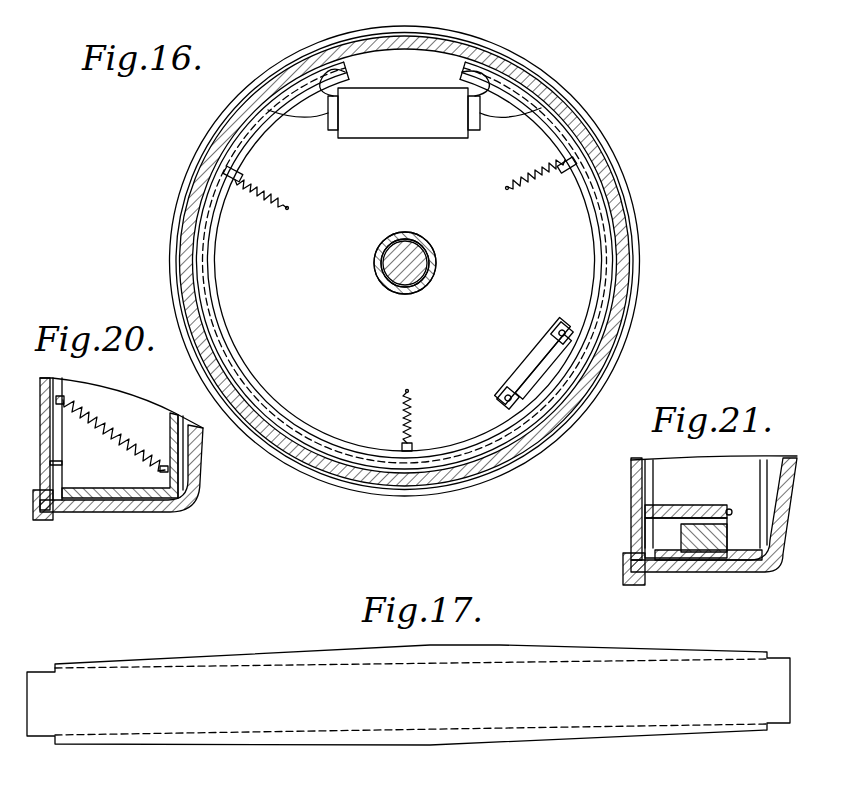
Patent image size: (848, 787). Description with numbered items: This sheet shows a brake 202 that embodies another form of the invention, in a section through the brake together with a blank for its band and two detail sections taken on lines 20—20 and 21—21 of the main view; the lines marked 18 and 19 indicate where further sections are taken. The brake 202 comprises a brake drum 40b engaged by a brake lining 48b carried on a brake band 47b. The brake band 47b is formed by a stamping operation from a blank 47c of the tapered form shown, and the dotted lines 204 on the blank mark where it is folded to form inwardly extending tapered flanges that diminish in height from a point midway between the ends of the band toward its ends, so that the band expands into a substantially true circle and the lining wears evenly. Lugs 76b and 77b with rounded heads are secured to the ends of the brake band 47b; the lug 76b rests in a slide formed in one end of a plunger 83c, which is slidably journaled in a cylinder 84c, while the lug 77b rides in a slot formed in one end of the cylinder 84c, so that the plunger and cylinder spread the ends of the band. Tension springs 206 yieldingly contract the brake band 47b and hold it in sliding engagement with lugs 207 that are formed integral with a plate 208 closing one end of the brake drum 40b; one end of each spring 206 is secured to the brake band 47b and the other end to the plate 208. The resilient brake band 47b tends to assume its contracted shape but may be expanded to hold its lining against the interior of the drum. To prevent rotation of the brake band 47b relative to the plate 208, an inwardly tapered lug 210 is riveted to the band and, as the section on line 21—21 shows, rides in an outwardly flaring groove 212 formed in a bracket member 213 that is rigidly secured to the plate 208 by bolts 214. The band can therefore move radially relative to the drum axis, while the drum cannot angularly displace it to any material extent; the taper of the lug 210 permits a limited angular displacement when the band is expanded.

In FIG. 16, the section line 18- 18 is at (482, 506).
In FIG. 16, the section line 19- 19 is at (527, 152).
In FIG. 16, the section line 20— 20 is at (402, 518).
In FIG. 16, the section line 21— 21 is at (622, 387).
In FIG. 16, the brake drum 40b is at (618, 176).
In FIG. 20, the brake drum 40b is at (131, 513).
In FIG. 21, the brake drum 40b is at (668, 573).
In FIG. 16, the brake band 47b is at (596, 322).
In FIG. 20, the brake band 47b is at (186, 482).
In FIG. 21, the brake band 47b is at (778, 561).
In FIG. 17, the blank 47c is at (733, 705).
In FIG. 16, the brake lining 48b is at (620, 198).
In FIG. 20, the brake lining 48b is at (168, 506).
In FIG. 21, the brake lining 48b is at (703, 561).
In FIG. 16, the lug 76b is at (301, 118).
In FIG. 16, the lug 77b is at (492, 128).
In FIG. 16, the plunger 83c is at (333, 133).
In FIG. 16, the cylinder 84c is at (406, 138).
In FIG. 16, the brake 202 is at (577, 113).
In FIG. 17, the dotted fold lines 204 is at (365, 665).
In FIG. 16, the tension springs 206 is at (540, 183).
In FIG. 20, the tension springs 206 is at (120, 418).
In FIG. 16, the lugs 207 is at (567, 171).
In FIG. 20, the lugs 207 is at (57, 487).
In FIG. 20, the plate 208 is at (38, 522).
In FIG. 21, the plate 208 is at (625, 572).
In FIG. 16, the inwardly tapered lug 210 is at (552, 376).
In FIG. 21, the inwardly tapered lug 210 is at (705, 561).
In FIG. 16, the outwardly flaring groove 212 is at (539, 378).
In FIG. 21, the outwardly flaring groove 212 is at (665, 522).
In FIG. 16, the bracket member 213 is at (531, 360).
In FIG. 21, the bracket member 213 is at (645, 512).
In FIG. 16, the bolts 214 is at (505, 395).
In FIG. 21, the bolts 214 is at (731, 514).